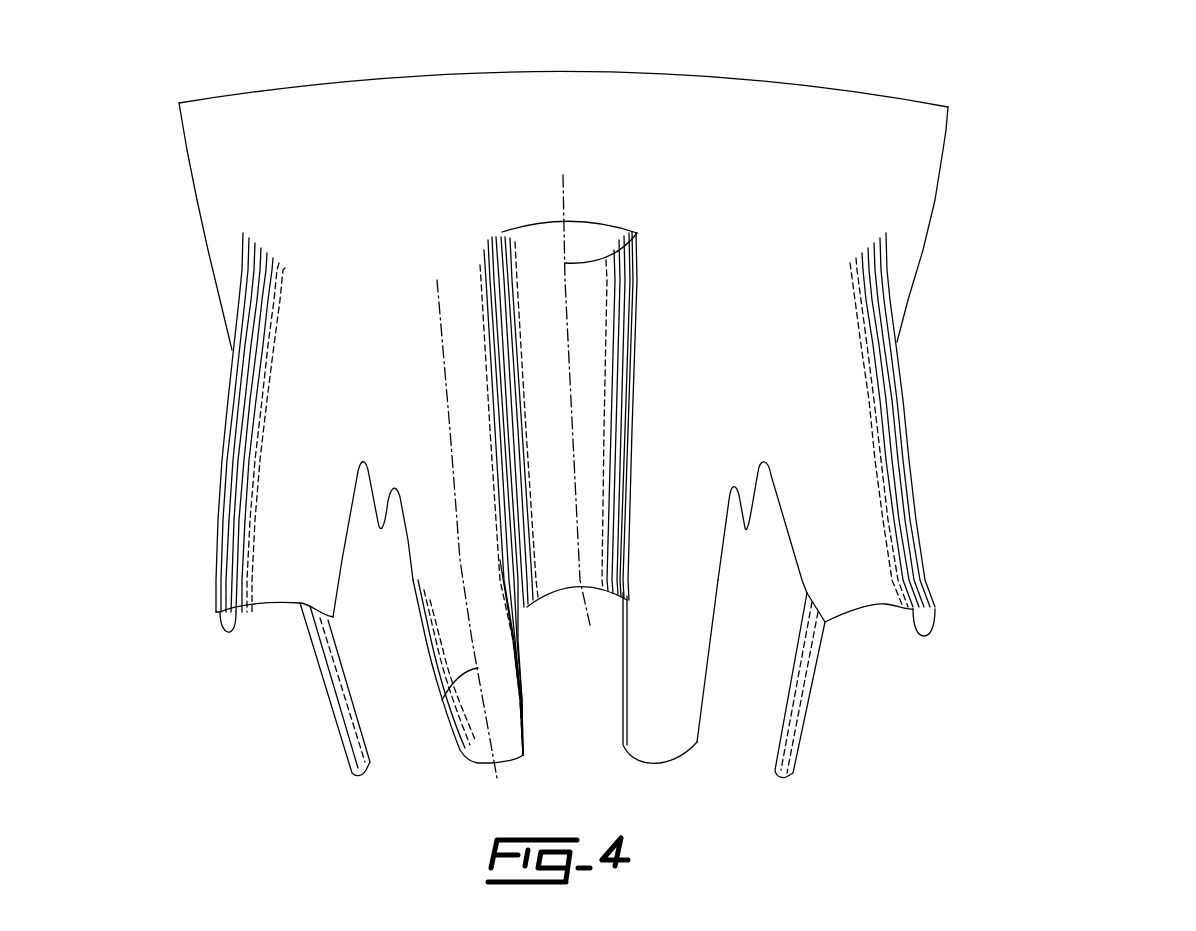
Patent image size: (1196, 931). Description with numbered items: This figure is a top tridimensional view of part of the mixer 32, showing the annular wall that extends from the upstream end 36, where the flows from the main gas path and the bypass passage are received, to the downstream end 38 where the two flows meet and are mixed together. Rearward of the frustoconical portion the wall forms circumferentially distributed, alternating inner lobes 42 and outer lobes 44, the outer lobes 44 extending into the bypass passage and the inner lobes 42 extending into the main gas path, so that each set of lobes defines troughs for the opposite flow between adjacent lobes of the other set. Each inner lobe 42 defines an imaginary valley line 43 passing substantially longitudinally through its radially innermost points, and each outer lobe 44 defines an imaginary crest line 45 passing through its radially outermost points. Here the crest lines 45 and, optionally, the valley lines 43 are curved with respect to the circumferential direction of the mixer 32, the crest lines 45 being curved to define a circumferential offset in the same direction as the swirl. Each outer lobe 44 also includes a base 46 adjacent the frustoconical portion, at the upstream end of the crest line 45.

The mixer 32 is at (1080, 133).
The upstream end 36 is at (602, 92).
The downstream end 38 is at (935, 605).
The inner lobes 42 is at (687, 732).
The valley line 43 is at (442, 700).
The outer lobes 44 is at (893, 527).
The crest line 45 is at (637, 235).
The base 46 is at (530, 223).